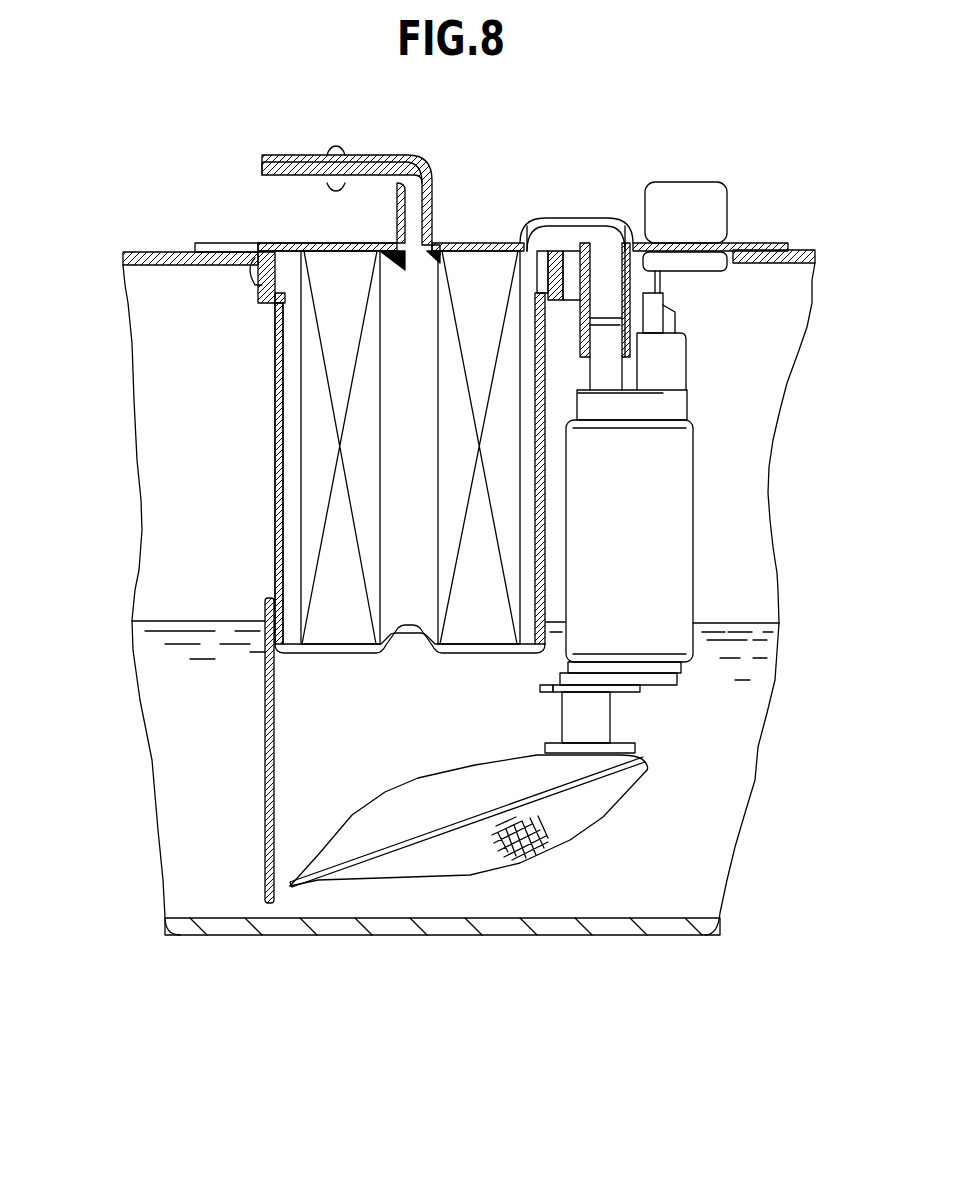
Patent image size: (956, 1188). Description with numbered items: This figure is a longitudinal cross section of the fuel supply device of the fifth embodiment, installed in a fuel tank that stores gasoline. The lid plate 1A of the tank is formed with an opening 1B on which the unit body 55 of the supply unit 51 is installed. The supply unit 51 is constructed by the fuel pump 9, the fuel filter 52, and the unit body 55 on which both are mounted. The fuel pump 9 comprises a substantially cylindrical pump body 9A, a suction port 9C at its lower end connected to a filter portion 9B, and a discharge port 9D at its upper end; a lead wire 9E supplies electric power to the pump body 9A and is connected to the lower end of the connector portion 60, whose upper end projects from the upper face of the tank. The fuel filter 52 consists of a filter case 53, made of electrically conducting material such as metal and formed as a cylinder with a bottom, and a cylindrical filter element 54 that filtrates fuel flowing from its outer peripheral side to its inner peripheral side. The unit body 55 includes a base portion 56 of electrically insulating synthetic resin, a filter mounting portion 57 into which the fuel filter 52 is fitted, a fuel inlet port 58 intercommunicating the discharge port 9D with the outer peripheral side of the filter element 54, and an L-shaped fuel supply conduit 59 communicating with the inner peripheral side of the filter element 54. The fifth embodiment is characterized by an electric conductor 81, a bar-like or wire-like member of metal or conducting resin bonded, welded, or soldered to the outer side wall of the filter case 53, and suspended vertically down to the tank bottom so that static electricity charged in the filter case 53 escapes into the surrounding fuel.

The lid plate 1A is at (148, 255).
The opening 1B is at (250, 258).
The fuel pump 9 is at (690, 492).
The pump body 9A is at (665, 607).
The filter portion 9B is at (415, 872).
The suction port 9C is at (600, 737).
The discharge port 9D is at (607, 370).
The lead wire 9E is at (662, 297).
The supply unit 51 is at (557, 200).
The fuel filter 52 is at (273, 485).
The filter case 53 is at (275, 532).
The filter element 54 is at (310, 415).
The unit body 55 is at (466, 243).
The base portion 56 is at (312, 243).
The filter mounting portion 57 is at (258, 275).
The fuel inlet port 58 is at (607, 270).
The fuel supply conduit 59 is at (283, 153).
The connector portion 60 is at (695, 198).
The electric conductor 81 is at (265, 779).